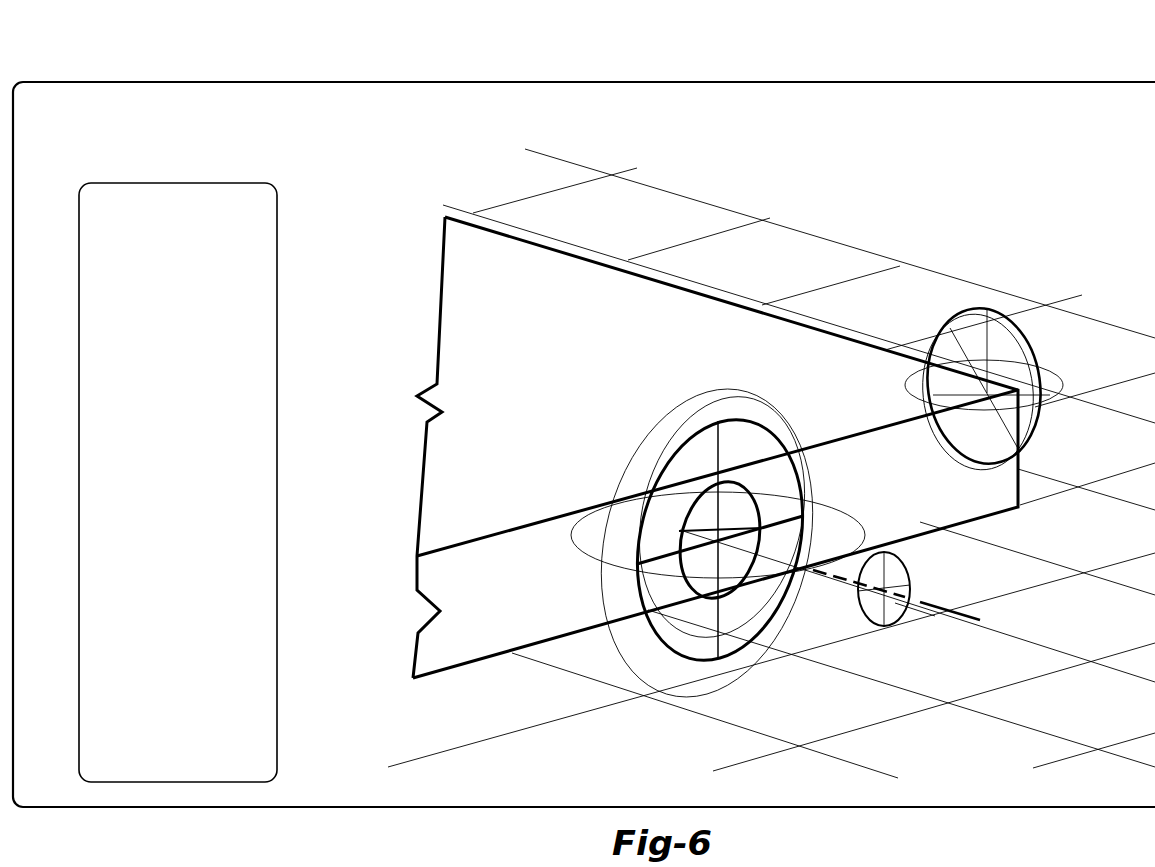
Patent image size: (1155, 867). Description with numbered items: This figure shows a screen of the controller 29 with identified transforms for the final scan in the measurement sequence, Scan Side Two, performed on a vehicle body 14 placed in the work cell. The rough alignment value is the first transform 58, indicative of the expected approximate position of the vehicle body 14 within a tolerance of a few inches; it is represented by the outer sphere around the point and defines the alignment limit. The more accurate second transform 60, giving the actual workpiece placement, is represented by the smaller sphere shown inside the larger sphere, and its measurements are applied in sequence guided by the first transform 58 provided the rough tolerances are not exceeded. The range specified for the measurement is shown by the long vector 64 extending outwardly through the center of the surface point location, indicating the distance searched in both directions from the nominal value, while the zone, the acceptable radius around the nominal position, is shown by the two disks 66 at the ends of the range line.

The controller 29 is at (633, 81).
The vehicle body 14 is at (600, 358).
The first transform 58 is at (770, 681).
The second transform 60 is at (712, 657).
The vector 64 is at (940, 607).
The disks 66 is at (633, 589).